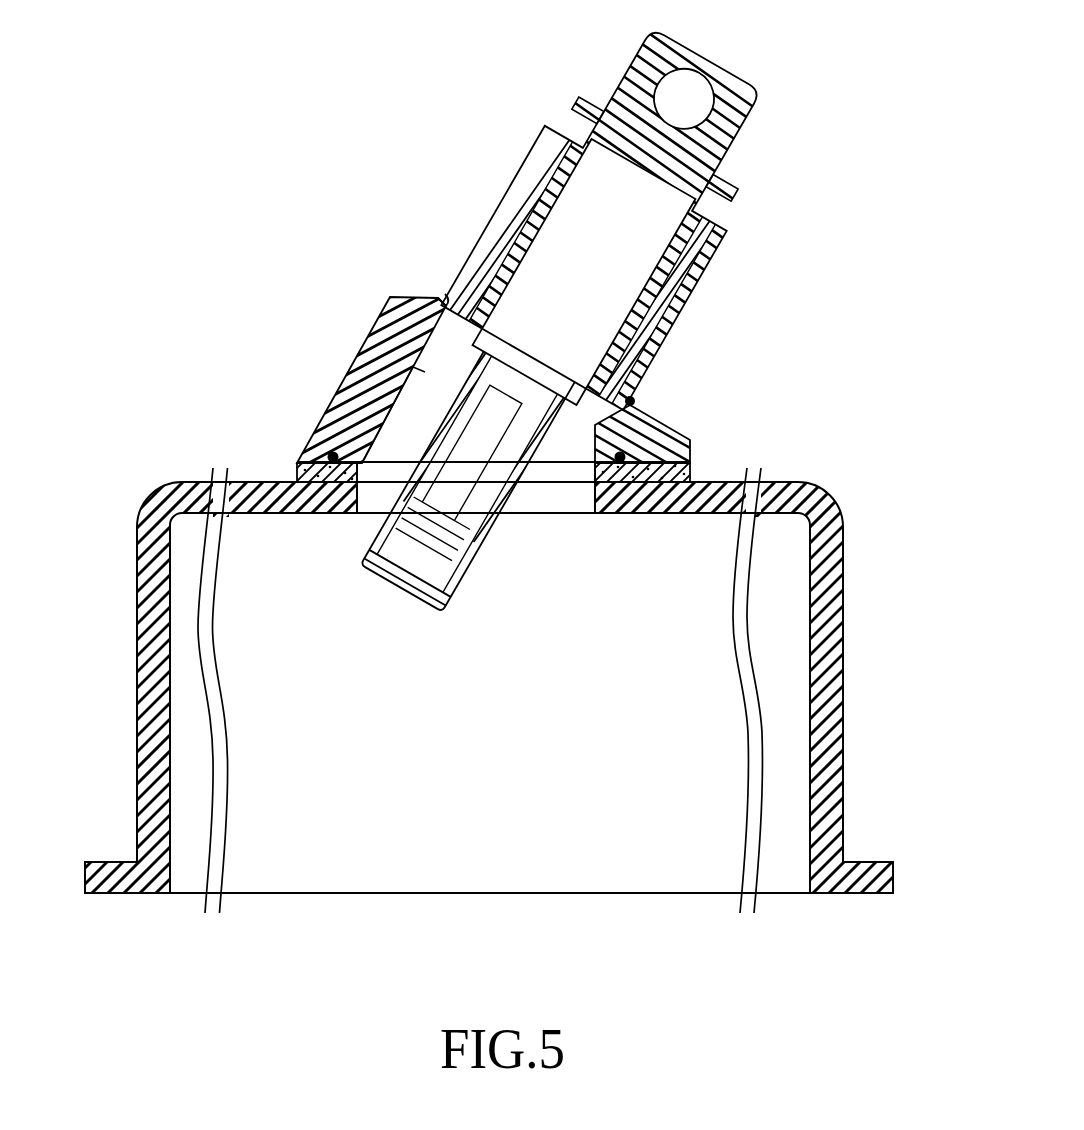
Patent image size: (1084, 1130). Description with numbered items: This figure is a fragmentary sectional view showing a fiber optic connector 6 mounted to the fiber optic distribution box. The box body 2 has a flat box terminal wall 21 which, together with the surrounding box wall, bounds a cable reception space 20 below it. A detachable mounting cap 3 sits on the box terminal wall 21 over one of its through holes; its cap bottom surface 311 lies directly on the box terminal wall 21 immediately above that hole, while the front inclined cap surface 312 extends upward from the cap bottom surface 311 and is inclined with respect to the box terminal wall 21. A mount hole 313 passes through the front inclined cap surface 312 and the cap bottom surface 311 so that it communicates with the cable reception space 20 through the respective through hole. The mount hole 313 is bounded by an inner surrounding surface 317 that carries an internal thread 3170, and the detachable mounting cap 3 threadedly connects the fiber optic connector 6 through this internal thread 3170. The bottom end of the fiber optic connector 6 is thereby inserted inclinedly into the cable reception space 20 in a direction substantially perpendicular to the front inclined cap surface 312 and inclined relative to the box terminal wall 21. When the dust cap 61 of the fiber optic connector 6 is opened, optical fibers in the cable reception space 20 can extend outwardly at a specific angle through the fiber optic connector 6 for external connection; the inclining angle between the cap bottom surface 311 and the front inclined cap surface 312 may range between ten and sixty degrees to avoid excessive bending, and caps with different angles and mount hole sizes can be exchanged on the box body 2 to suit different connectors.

The box body 2 is at (229, 438).
The cable reception space 20 is at (527, 876).
The box terminal wall 21 is at (274, 482).
The detachable mounting cap 3 is at (322, 322).
The cap bottom surface 311 is at (655, 486).
The front inclined cap surface 312 is at (683, 430).
The mount hole 313 is at (382, 452).
The inner surrounding surface 317 is at (392, 414).
The internal thread 3170 is at (442, 296).
The fiber optic connector 6 is at (700, 300).
The dust cap 61 is at (713, 223).